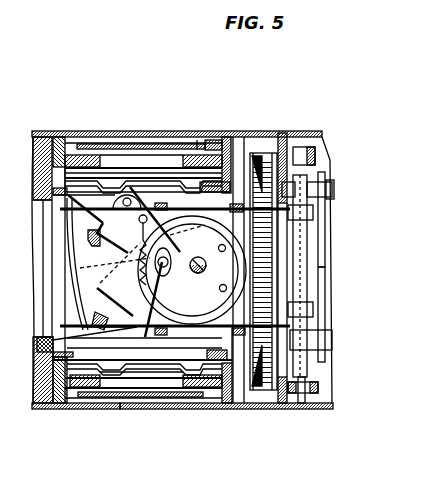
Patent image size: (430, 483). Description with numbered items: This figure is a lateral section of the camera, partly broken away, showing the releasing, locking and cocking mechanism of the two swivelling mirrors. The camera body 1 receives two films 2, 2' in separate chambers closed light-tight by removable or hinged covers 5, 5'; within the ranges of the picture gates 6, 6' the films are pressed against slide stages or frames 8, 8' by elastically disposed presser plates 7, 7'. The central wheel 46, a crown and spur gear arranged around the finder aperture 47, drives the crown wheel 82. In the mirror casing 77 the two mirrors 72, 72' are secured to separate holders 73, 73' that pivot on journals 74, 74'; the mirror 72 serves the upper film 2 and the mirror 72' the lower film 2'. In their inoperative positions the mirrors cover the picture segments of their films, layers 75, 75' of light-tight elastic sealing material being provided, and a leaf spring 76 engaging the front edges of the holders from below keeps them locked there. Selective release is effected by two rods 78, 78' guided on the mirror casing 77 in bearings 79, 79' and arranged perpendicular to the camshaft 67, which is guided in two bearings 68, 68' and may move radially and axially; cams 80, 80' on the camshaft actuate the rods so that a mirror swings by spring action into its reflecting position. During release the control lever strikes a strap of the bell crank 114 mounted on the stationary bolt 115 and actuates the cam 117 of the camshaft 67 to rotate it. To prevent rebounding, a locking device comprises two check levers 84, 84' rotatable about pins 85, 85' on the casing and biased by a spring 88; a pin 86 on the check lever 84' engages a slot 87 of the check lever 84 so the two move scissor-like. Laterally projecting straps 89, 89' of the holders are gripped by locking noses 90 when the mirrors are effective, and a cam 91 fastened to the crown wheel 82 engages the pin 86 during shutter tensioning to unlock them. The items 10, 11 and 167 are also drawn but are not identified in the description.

The camera body 1 is at (47, 375).
The film 2 is at (177, 123).
The film 2' is at (144, 401).
The cover 5 is at (143, 133).
The cover 5' is at (304, 406).
The picture gate 6 is at (73, 143).
The picture gate 6' is at (48, 399).
The presser plate 7 is at (141, 119).
The presser plate 7' is at (140, 415).
The slide stage 8 is at (204, 124).
The slide stage 8' is at (65, 416).
The intermediate plate 10 is at (143, 173).
The intermediate plate 11 is at (153, 178).
The central wheel 46 is at (280, 133).
The finder aperture 47 is at (280, 410).
The camshaft 67 is at (318, 408).
The bearing 68 is at (323, 251).
The bearing 68' is at (327, 388).
The swivelling mirror 72 is at (96, 262).
The swivelling mirror 72' is at (116, 337).
The mirror holder 73 is at (196, 232).
The mirror holder 73' is at (219, 382).
The journal 74 is at (231, 257).
The journal 74' is at (225, 280).
The sealing layer 75 is at (141, 218).
The sealing layer 75' is at (132, 277).
The leaf spring 76 is at (0, 57).
The mirror casing 77 is at (0, 75).
The rod 78 is at (342, 189).
The rod 78' is at (202, 411).
The bearing 79 is at (209, 150).
The bearing 79' is at (203, 298).
The cam 80 is at (209, 212).
The cam 80' is at (211, 325).
The crown wheel 82 is at (167, 410).
The check lever 84 is at (143, 133).
The check lever 84' is at (132, 408).
The pin 85 is at (143, 140).
The pin 85' is at (121, 358).
The coupling pin 86 is at (150, 262).
The slot 87 is at (140, 244).
The spring 88 is at (132, 410).
The strap 89 is at (115, 108).
The strap 89' is at (75, 214).
The locking nose 90 is at (90, 236).
The cam 91 is at (200, 240).
The bell crank 114 is at (327, 360).
The stationary bolt 115 is at (330, 185).
The cam 117 is at (323, 175).
The outer wall line 167 is at (3, 90).